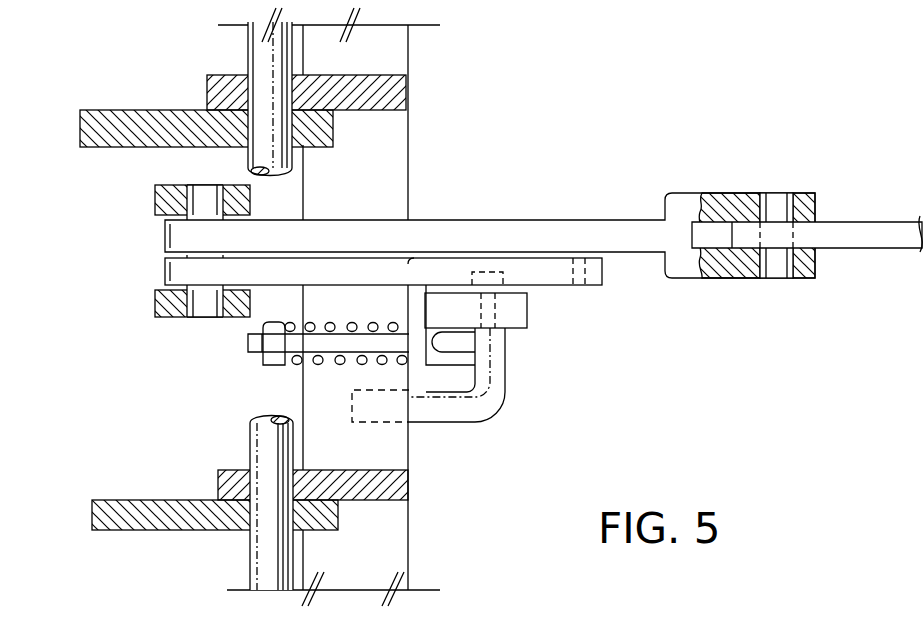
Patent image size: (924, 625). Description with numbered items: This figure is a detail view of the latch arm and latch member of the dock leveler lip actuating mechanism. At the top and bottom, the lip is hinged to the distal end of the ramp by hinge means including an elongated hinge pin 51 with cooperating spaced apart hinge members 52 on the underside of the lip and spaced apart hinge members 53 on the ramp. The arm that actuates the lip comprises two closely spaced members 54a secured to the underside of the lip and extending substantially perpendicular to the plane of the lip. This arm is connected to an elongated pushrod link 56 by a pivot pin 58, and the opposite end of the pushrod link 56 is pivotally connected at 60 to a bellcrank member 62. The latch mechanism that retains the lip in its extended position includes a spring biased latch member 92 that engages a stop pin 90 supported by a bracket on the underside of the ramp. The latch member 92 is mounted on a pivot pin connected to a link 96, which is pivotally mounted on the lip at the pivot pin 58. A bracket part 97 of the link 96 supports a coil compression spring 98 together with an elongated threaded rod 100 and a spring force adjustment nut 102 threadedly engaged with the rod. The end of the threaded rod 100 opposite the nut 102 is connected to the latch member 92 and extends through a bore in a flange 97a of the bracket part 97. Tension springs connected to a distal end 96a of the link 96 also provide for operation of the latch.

The hinge pin 51 is at (250, 437).
The hinge members 52 is at (115, 110).
The hinge members 53 is at (381, 73).
The closely spaced members 54a is at (154, 188).
The pushrod link 56 is at (557, 219).
The pivot pin 58 is at (198, 193).
The pivotal connection 60 is at (773, 268).
The bellcrank member 62 is at (877, 219).
The stop pin 90 is at (507, 373).
The latch member 92 is at (528, 307).
The link 96 is at (295, 270).
The distal end of the link 96a is at (601, 274).
The bracket part 97 is at (387, 268).
The flange 97a is at (418, 368).
The coil compression spring 98 is at (327, 366).
The threaded rod 100 is at (245, 343).
The spring force adjustment nut 102 is at (272, 367).